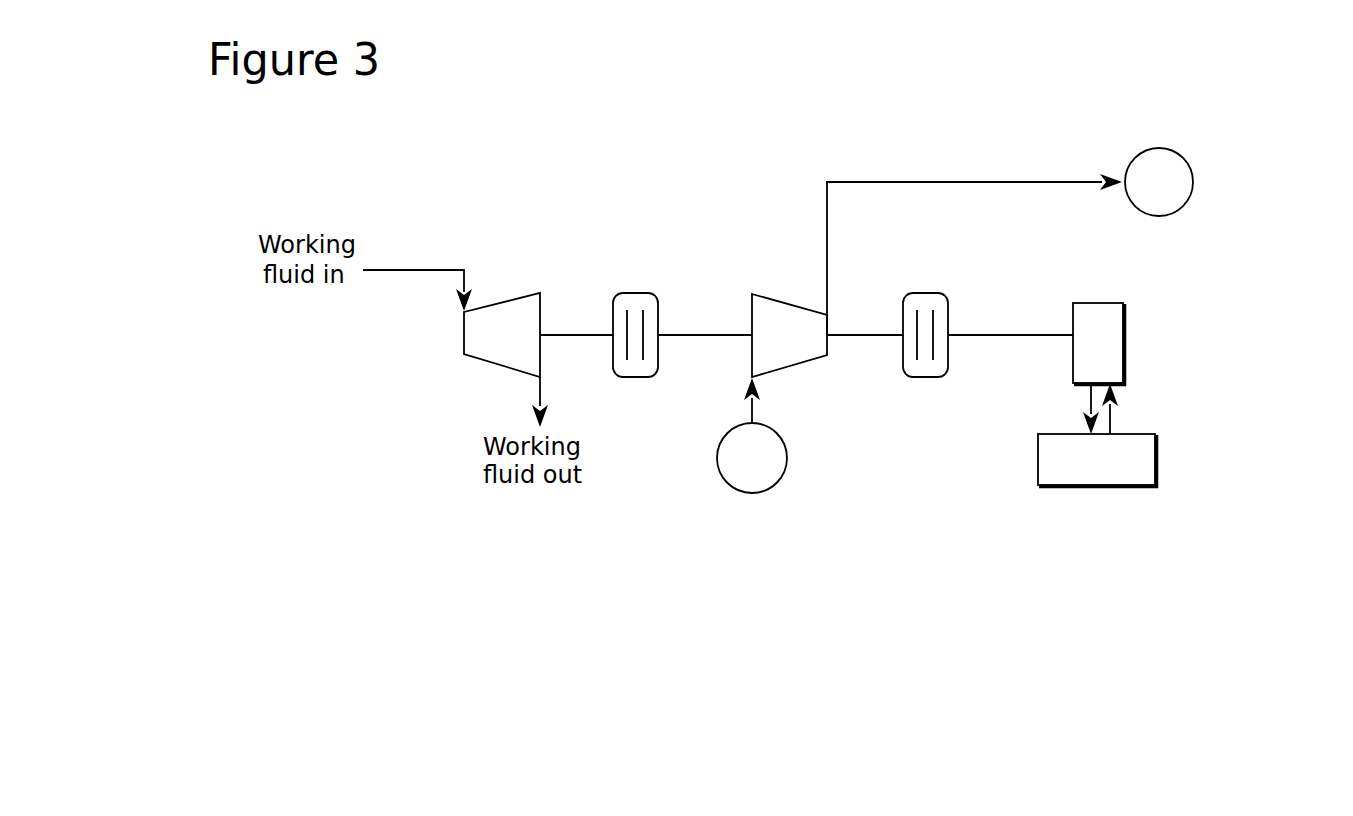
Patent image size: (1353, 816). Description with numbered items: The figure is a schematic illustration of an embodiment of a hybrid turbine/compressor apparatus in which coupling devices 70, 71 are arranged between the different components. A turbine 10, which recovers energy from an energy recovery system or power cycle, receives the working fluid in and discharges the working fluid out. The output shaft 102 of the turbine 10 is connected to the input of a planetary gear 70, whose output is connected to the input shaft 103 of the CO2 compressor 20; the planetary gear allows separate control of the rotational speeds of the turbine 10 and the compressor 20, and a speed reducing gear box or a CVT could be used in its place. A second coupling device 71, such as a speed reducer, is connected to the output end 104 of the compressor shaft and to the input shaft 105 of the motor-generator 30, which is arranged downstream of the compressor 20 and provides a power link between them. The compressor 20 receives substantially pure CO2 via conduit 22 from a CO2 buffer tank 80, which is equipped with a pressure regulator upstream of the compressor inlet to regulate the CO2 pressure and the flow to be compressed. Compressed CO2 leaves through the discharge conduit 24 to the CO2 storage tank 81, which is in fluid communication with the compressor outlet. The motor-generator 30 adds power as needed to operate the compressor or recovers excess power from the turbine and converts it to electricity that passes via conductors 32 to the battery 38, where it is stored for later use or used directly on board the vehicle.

The turbine 10 is at (505, 301).
The CO2 compressor 20 is at (793, 305).
The conduit 22 is at (740, 415).
The discharge conduit 24 is at (957, 182).
The motor-generator 30 is at (1124, 336).
The conductors 32 is at (1113, 417).
The battery 38 is at (1156, 463).
The planetary gear 70 is at (637, 293).
The second coupling device 71 is at (923, 293).
The CO2 buffer tank 80 is at (776, 433).
The CO2 storage tank 81 is at (1152, 148).
The output shaft 102 is at (572, 335).
The input shaft 103 is at (708, 335).
The output end 104 is at (860, 335).
The input shaft 105 is at (973, 335).